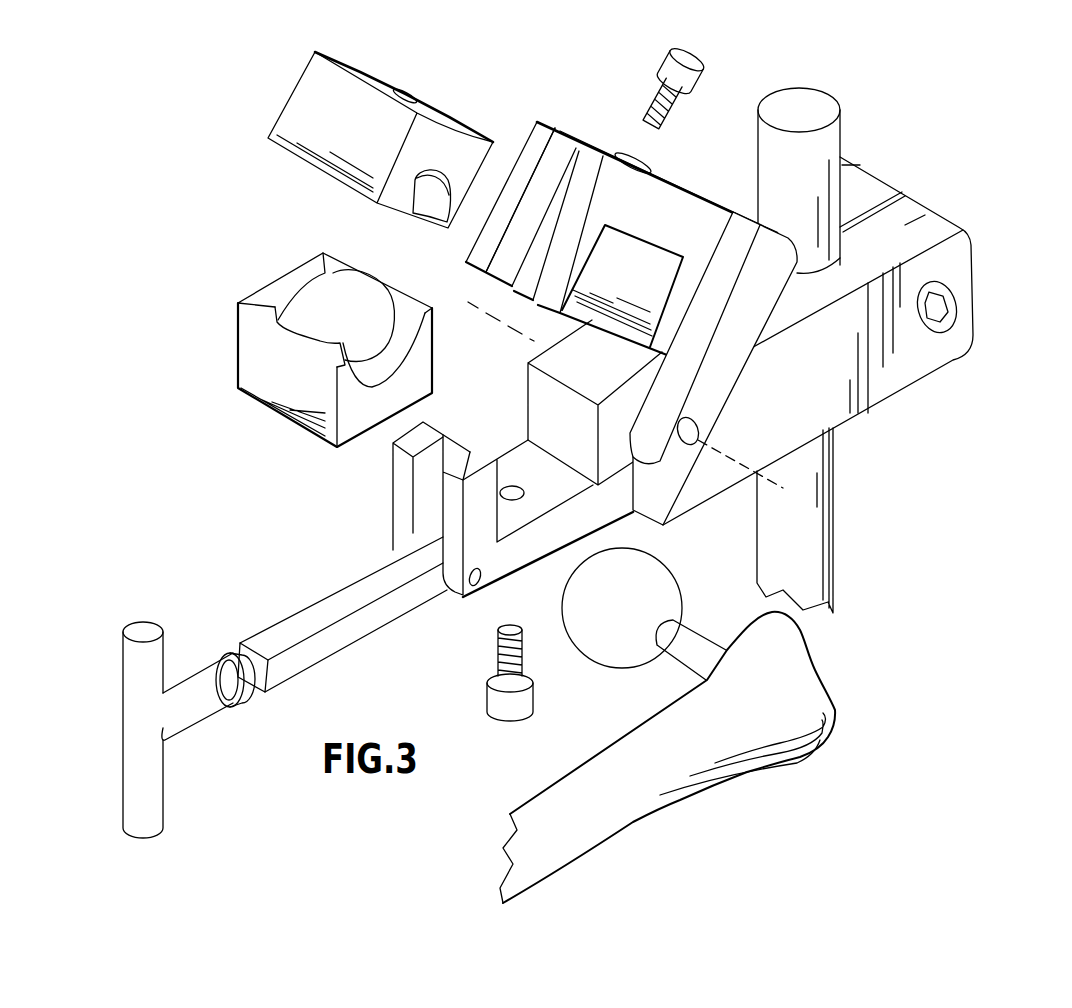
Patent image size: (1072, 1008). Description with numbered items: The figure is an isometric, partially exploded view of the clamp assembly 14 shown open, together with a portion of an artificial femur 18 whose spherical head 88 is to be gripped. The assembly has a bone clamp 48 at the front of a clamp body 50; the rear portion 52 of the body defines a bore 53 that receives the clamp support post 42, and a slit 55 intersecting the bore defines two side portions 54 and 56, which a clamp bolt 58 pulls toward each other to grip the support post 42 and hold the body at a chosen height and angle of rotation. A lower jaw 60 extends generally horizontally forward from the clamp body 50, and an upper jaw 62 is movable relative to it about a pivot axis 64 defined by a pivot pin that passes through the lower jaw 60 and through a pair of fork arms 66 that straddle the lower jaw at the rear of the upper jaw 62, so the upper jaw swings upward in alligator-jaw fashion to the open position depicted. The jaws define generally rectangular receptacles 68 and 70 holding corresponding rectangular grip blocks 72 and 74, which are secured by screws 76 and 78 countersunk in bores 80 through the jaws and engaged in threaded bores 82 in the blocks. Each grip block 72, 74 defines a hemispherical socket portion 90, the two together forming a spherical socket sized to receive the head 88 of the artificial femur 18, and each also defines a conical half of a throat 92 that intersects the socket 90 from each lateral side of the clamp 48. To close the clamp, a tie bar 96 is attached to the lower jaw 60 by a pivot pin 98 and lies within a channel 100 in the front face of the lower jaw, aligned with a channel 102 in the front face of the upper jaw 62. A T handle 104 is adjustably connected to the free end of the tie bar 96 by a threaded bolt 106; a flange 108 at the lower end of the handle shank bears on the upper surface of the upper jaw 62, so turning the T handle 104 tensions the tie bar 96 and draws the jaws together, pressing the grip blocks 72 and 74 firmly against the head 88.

The clamp assembly 14 is at (933, 138).
The artificial femur 18 is at (790, 770).
The clamp support post 42 is at (800, 95).
The bone clamp 48 is at (400, 465).
The clamp body 50 is at (686, 387).
The rear portion 52 is at (852, 318).
The bore 53 is at (837, 260).
The side portion 54 is at (852, 178).
The slit 55 is at (870, 202).
The side portion 56 is at (920, 217).
The clamp bolt 58 is at (957, 315).
The lower jaw 60 is at (549, 371).
The upper jaw 62 is at (621, 214).
The pivot axis 64 is at (737, 460).
The fork arms 66 is at (735, 353).
The receptacle 68 is at (537, 395).
The receptacle 70 is at (630, 250).
The grip block 72 is at (352, 308).
The grip block 74 is at (354, 135).
The screw 76 is at (510, 720).
The screw 78 is at (695, 55).
The bore 80 is at (512, 486).
The threaded bore 82 is at (413, 95).
The spherical head 88 is at (618, 673).
The socket portion 90 is at (360, 300).
The throat 92 is at (313, 298).
The tie bar 96 is at (342, 622).
The pivot pin 98 is at (478, 584).
The channel 100 is at (425, 508).
The channel 102 is at (562, 150).
The T handle 104 is at (123, 785).
The bolt 106 is at (280, 677).
The flange 108 is at (222, 657).